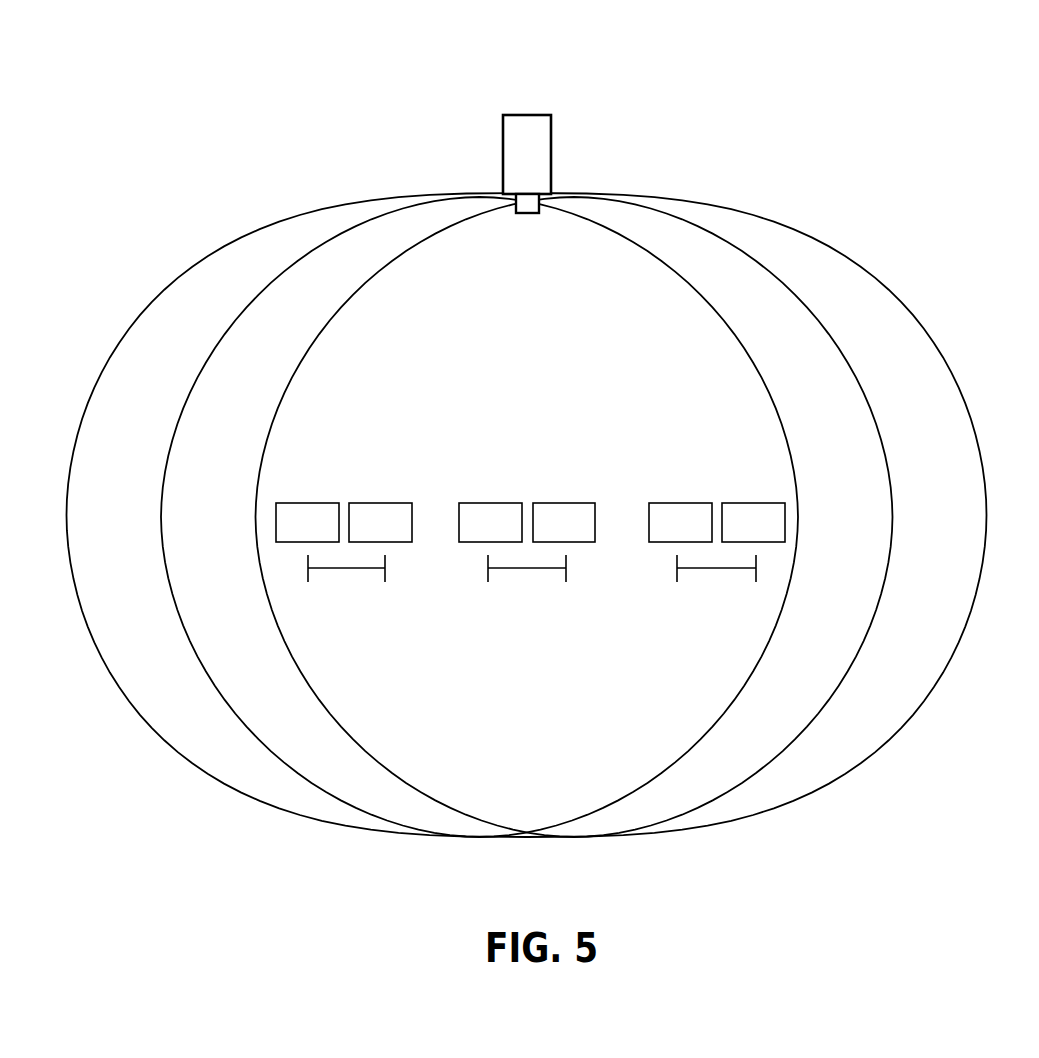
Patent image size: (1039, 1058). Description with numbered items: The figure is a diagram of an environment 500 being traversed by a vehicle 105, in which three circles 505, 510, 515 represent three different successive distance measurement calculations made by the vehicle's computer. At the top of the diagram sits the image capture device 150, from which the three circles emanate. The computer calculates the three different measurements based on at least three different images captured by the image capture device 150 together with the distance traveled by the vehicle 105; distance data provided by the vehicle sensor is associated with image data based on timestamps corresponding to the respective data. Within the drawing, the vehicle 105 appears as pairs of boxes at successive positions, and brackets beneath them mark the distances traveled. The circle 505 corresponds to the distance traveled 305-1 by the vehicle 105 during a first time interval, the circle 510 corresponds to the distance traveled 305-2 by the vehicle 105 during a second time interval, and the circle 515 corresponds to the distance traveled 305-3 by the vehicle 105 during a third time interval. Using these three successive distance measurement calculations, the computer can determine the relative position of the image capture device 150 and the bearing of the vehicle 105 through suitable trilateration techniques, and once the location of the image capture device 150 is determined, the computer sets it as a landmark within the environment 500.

The environment 500 is at (842, 97).
The image capture device 150 is at (551, 136).
The vehicle 105 is at (530, 522).
The distance traveled during a first time interval 305-1 is at (326, 568).
The distance traveled during a second time interval 305-2 is at (506, 568).
The distance traveled during a third time interval 305-3 is at (725, 568).
The circle 505 is at (797, 473).
The circle 510 is at (892, 473).
The circle 515 is at (907, 312).